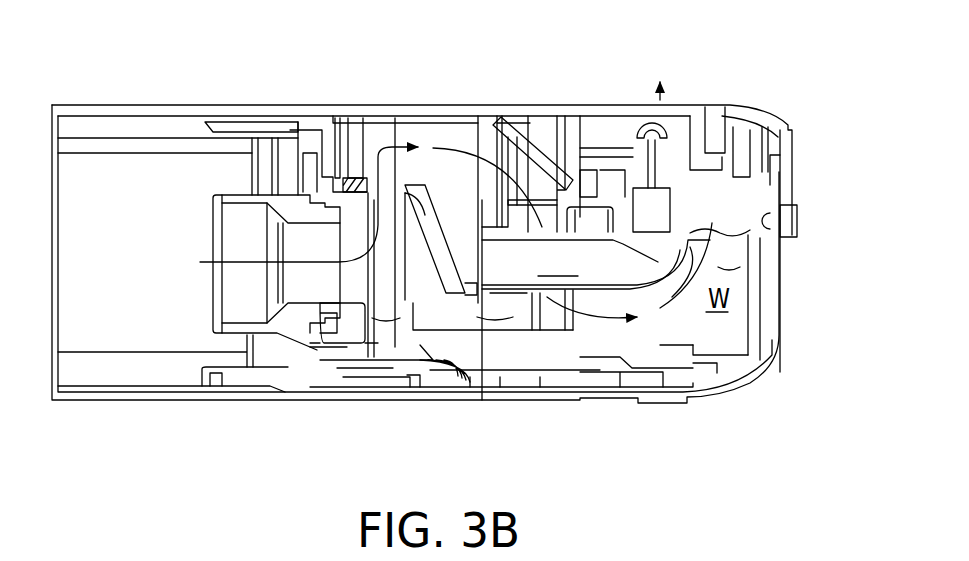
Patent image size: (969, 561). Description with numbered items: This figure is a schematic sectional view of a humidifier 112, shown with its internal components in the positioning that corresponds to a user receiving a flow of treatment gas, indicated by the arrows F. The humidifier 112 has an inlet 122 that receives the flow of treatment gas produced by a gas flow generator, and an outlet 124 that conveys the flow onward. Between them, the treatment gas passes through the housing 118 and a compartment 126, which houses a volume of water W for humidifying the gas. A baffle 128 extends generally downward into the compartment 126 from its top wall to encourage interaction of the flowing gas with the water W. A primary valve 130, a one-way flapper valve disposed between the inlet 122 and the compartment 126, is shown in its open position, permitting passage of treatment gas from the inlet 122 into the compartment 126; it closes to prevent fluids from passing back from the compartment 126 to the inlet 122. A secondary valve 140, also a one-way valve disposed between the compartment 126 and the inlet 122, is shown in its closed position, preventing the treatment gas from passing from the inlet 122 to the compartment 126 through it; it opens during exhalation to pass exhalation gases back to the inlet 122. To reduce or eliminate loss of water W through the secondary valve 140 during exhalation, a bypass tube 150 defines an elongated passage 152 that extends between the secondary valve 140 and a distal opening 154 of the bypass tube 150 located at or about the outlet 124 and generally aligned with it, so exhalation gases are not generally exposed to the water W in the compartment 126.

The humidifier 112 is at (247, 60).
The housing 118 is at (435, 403).
The inlet 122 is at (203, 232).
The outlet 124 is at (636, 100).
The compartment 126 is at (740, 220).
The baffle 128 is at (553, 150).
The primary valve 130 is at (519, 128).
The secondary valve 140 is at (468, 259).
The bypass tube 150 is at (541, 295).
The elongated passage 152 is at (594, 258).
The distal opening 154 is at (640, 175).